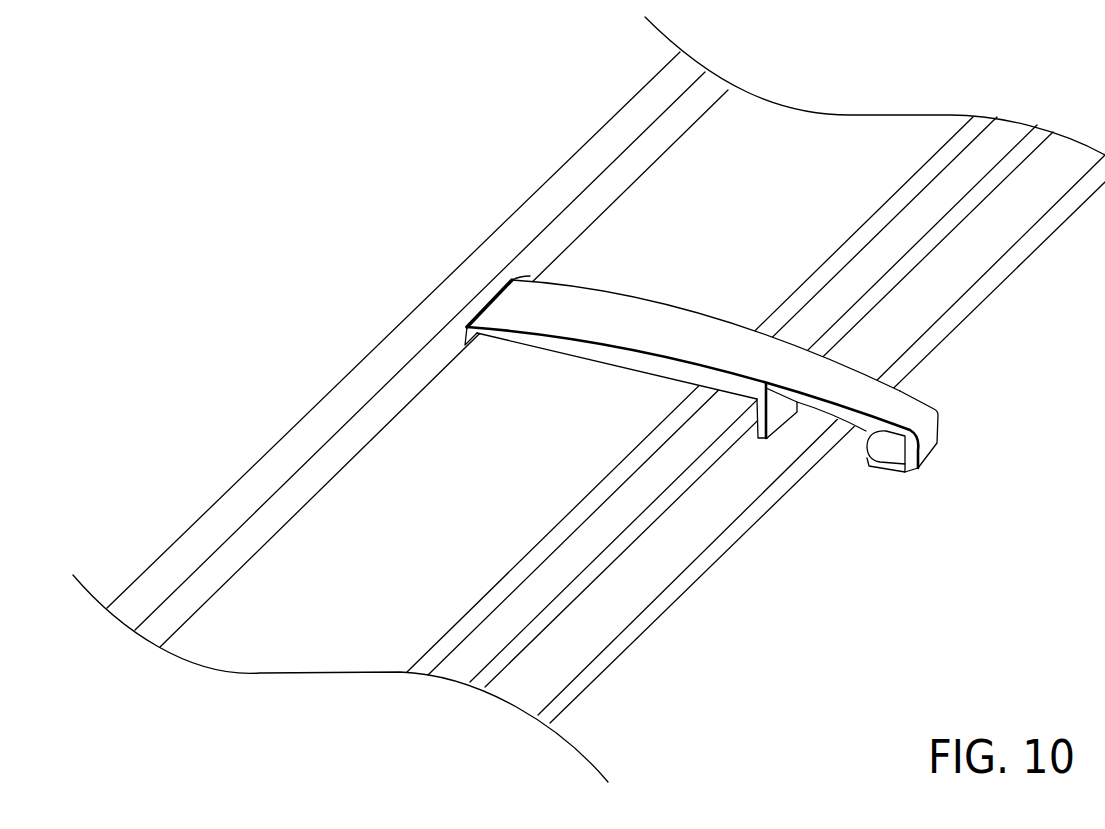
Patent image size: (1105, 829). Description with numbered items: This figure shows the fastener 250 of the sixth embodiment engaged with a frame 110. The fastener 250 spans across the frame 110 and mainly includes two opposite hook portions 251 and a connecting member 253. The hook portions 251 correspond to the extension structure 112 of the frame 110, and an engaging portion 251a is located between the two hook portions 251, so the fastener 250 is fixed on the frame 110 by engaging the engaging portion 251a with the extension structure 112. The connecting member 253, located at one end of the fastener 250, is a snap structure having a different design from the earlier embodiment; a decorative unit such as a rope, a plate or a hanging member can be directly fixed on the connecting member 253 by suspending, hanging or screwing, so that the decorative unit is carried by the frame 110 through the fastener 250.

The frame 110 is at (589, 399).
The extension structure 112 is at (707, 458).
The fastener 250 is at (699, 428).
The hook portion 251 is at (848, 508).
The engaging portion 251a is at (770, 408).
The connecting member 253 is at (888, 445).